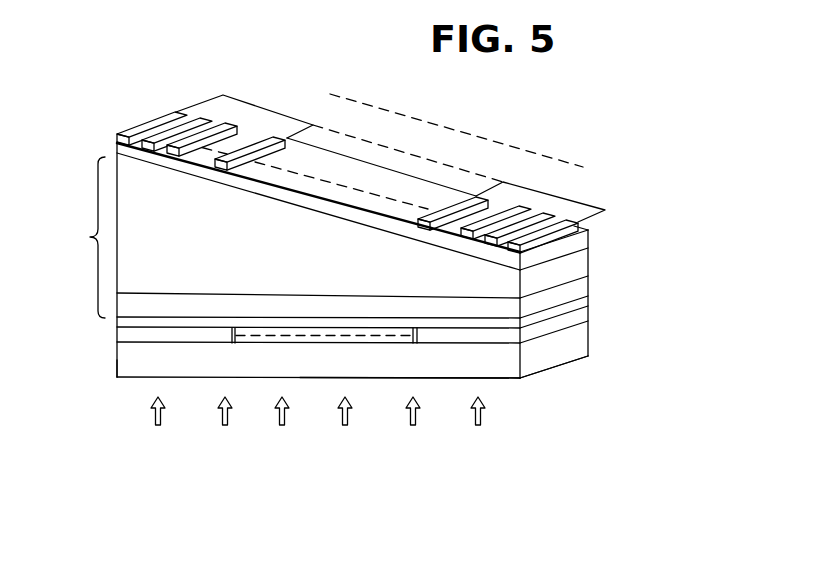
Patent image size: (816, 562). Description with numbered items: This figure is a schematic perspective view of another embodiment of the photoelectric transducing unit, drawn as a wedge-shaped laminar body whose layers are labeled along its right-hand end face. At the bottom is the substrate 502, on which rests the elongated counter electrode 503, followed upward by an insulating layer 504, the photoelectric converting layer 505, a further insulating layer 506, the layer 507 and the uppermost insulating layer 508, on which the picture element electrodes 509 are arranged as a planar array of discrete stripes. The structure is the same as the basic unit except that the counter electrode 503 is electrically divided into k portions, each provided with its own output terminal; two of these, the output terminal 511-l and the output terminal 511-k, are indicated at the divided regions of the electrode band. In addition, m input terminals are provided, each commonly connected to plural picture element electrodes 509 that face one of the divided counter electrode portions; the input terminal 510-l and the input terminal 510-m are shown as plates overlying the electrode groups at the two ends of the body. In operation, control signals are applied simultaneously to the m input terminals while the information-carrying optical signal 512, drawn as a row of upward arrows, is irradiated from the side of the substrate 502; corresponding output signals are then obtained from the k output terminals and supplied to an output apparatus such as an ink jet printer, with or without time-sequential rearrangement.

The substrate 502 is at (590, 347).
The counter electrode 503 is at (590, 319).
The insulating layer 504 is at (590, 301).
The photoelectric converting layer 505 is at (67, 237).
The insulating layer 506 is at (590, 289).
The tapered layer 507 is at (590, 266).
The insulating layer 508 is at (592, 238).
The picture element electrodes 509 is at (156, 120).
The input terminal 510-m is at (268, 110).
The input terminal 510-l is at (530, 190).
The output terminal 511-k is at (192, 332).
The output terminal 511-l is at (469, 333).
The information-carrying optical signal 512 is at (493, 433).